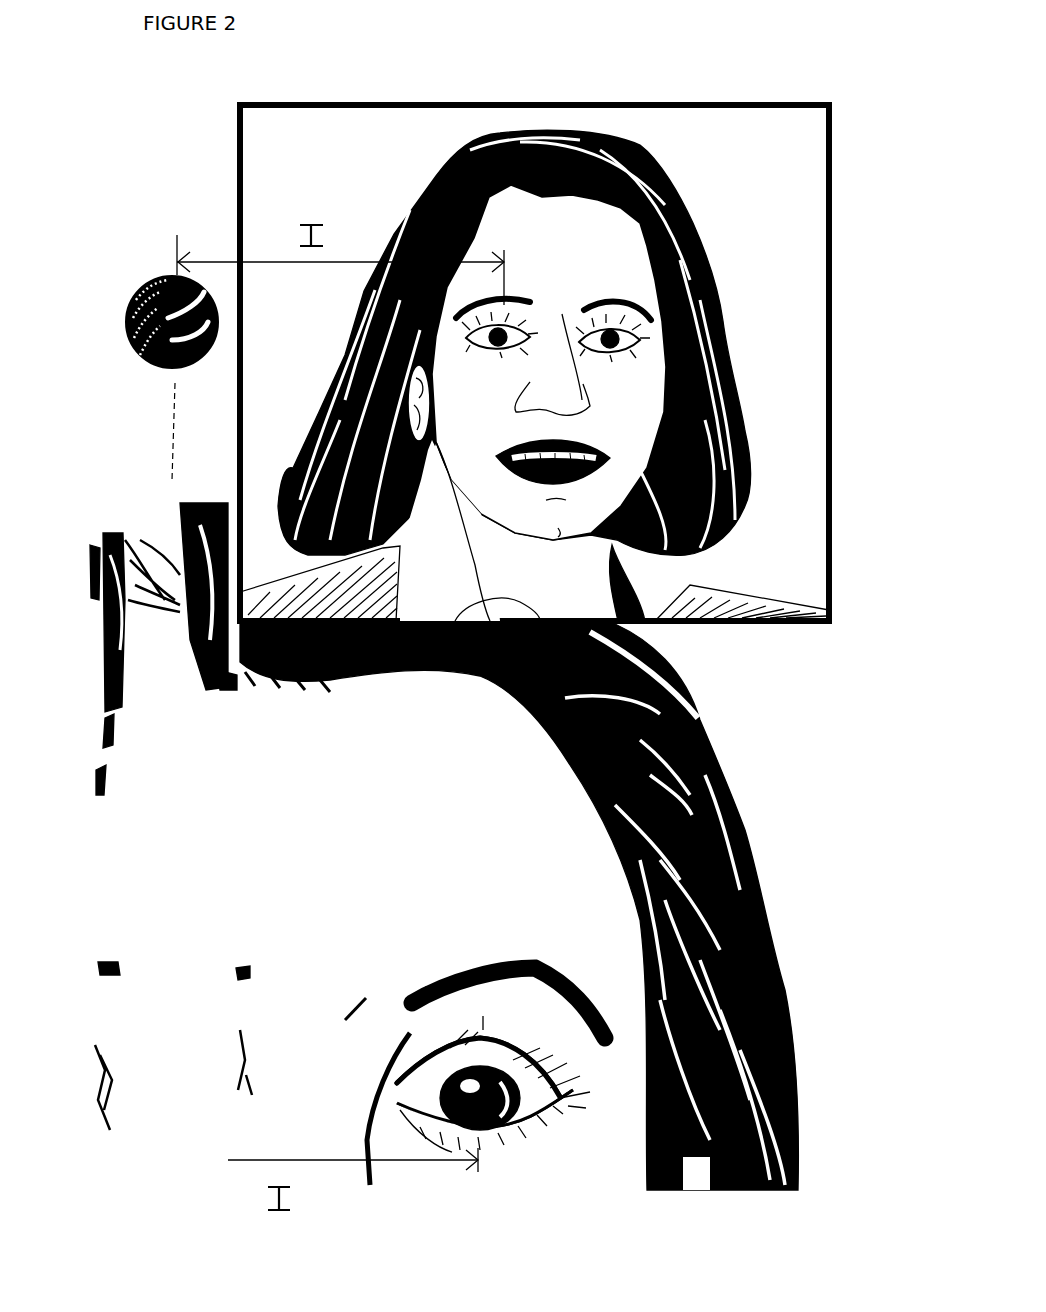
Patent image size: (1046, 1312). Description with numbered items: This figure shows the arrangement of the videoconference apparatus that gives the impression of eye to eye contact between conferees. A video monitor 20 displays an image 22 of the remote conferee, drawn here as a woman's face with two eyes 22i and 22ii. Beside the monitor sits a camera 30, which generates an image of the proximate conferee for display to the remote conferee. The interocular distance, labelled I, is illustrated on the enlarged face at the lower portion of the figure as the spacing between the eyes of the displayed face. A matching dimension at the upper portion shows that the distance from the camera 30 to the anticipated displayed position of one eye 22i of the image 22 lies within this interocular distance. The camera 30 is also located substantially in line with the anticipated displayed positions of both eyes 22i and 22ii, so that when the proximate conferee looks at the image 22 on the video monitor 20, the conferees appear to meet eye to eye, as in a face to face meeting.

The video monitor 20 is at (638, 86).
The image 22 is at (570, 511).
The eye 22i is at (498, 511).
The eye 22ii is at (620, 312).
The camera 30 is at (100, 333).